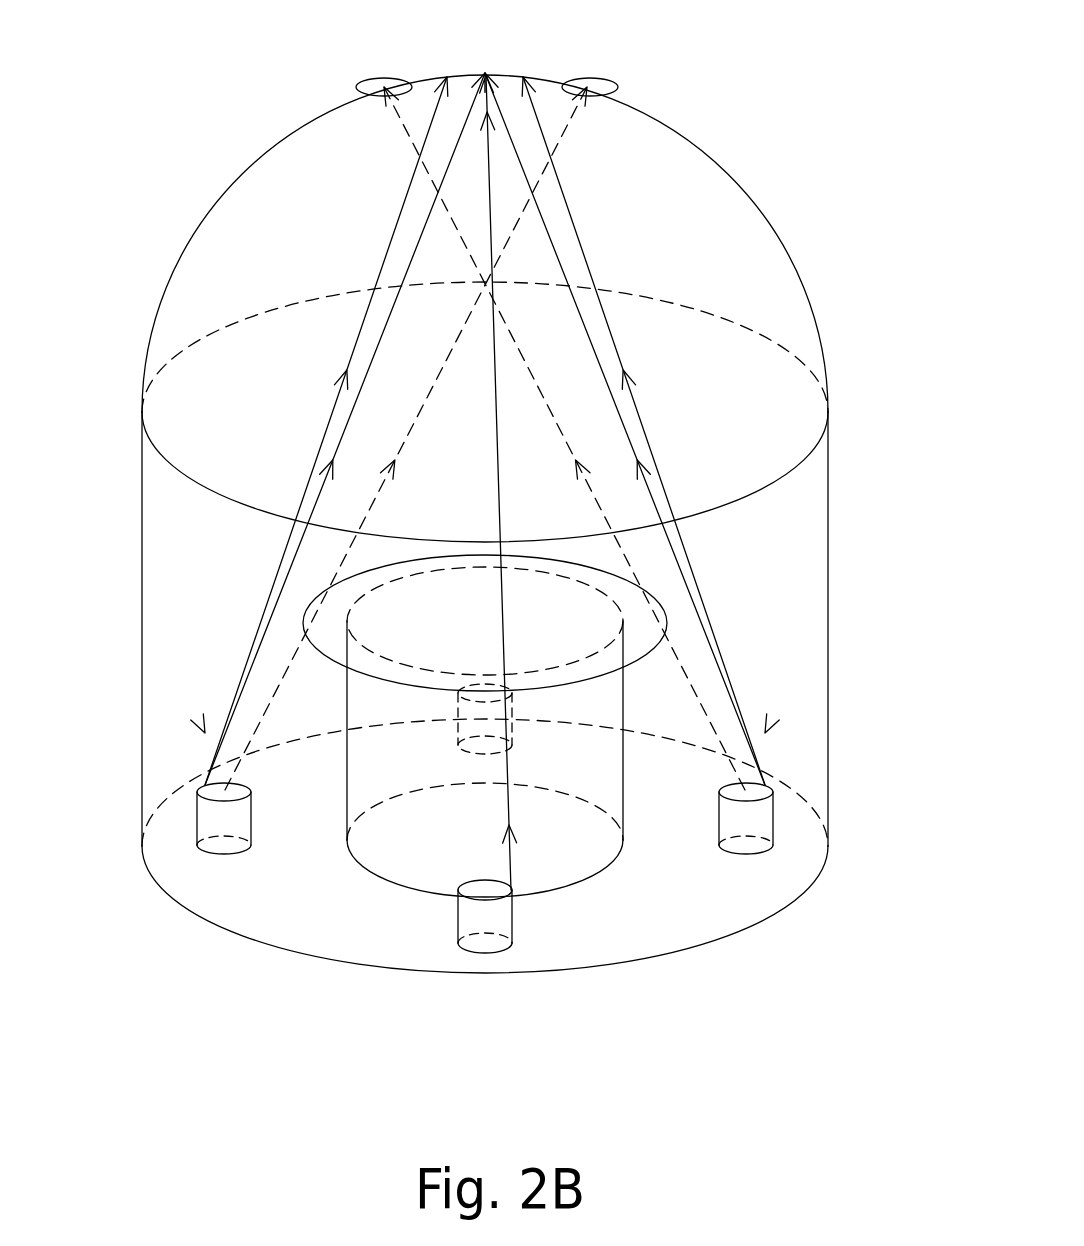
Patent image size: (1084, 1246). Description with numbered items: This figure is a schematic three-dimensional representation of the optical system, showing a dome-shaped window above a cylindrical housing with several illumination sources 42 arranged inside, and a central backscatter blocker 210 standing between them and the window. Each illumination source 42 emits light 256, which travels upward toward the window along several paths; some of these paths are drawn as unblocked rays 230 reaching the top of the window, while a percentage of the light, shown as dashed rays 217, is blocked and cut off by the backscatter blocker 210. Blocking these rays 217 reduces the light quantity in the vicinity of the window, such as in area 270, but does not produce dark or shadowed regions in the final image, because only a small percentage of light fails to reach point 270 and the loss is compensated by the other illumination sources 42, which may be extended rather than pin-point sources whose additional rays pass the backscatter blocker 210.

The illumination source 42 is at (253, 815).
The backscatter blocker 210 is at (306, 613).
The rays 217 is at (447, 362).
The light path 230 is at (354, 407).
The light 256 is at (205, 733).
The area 270 is at (387, 84).